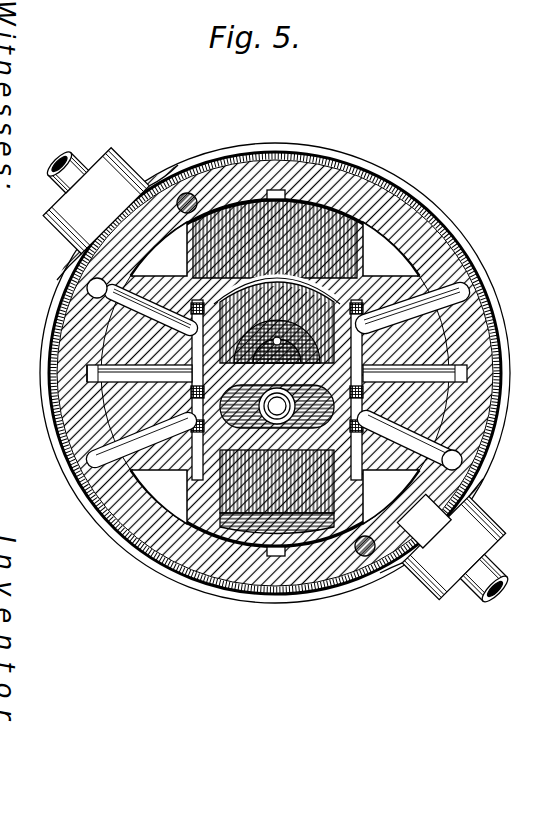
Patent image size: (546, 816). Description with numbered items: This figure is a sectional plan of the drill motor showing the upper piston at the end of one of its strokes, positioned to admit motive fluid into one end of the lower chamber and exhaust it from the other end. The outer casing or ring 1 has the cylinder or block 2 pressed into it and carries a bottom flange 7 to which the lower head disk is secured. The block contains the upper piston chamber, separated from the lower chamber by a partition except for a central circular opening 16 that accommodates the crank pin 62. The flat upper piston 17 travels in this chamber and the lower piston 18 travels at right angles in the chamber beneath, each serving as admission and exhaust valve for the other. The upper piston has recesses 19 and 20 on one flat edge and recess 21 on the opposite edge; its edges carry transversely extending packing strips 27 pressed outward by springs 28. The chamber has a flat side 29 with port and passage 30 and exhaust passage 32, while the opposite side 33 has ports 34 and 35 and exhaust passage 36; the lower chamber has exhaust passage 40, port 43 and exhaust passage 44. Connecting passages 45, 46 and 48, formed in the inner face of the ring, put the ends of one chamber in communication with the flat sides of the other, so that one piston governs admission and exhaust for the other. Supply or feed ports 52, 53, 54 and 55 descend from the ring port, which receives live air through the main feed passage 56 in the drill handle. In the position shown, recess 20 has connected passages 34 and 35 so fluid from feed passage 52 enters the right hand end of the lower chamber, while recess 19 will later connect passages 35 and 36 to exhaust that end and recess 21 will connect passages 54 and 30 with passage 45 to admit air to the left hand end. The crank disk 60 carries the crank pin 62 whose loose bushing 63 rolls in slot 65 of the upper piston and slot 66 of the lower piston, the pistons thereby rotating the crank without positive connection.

The outer casing or ring 1 is at (340, 586).
The cylinder or block 2 is at (178, 438).
The bottom flange 7 is at (196, 406).
The central circular opening 16 is at (498, 414).
The upper piston 17 is at (470, 374).
The lower piston 18 is at (62, 452).
The recess 19 is at (470, 508).
The recess 20 is at (452, 333).
The recess 21 is at (178, 480).
The packing strips 27 is at (370, 318).
The springs 28 is at (216, 556).
The flat side of piston chamber 29 is at (206, 240).
The port and passage 30 is at (141, 438).
The exhaust passage 32 is at (87, 288).
The upper right chamber 33 is at (372, 250).
The port and passage 34 is at (476, 333).
The port and passage 35 is at (482, 398).
The exhaust passage 36 is at (463, 459).
The exhaust passage 40 is at (362, 188).
The port and passage 43 is at (275, 239).
The exhaust passage 44 is at (185, 560).
The connecting passage 45 is at (92, 372).
The connecting passage 46 is at (282, 190).
The connecting passage 48 is at (278, 560).
The supply or feed port and passage 52 is at (430, 300).
The supply or feed port and passage 53 is at (188, 193).
The supply or feed port and passage 54 is at (155, 418).
The supply or feed port and passage 55 is at (371, 553).
The main supply or feed port and passage 56 is at (502, 580).
The crank disk 60 is at (180, 345).
The crank pin 62 is at (277, 406).
The bushing or collar 63 is at (277, 481).
The slot 65 is at (175, 462).
The slot 66 is at (462, 354).